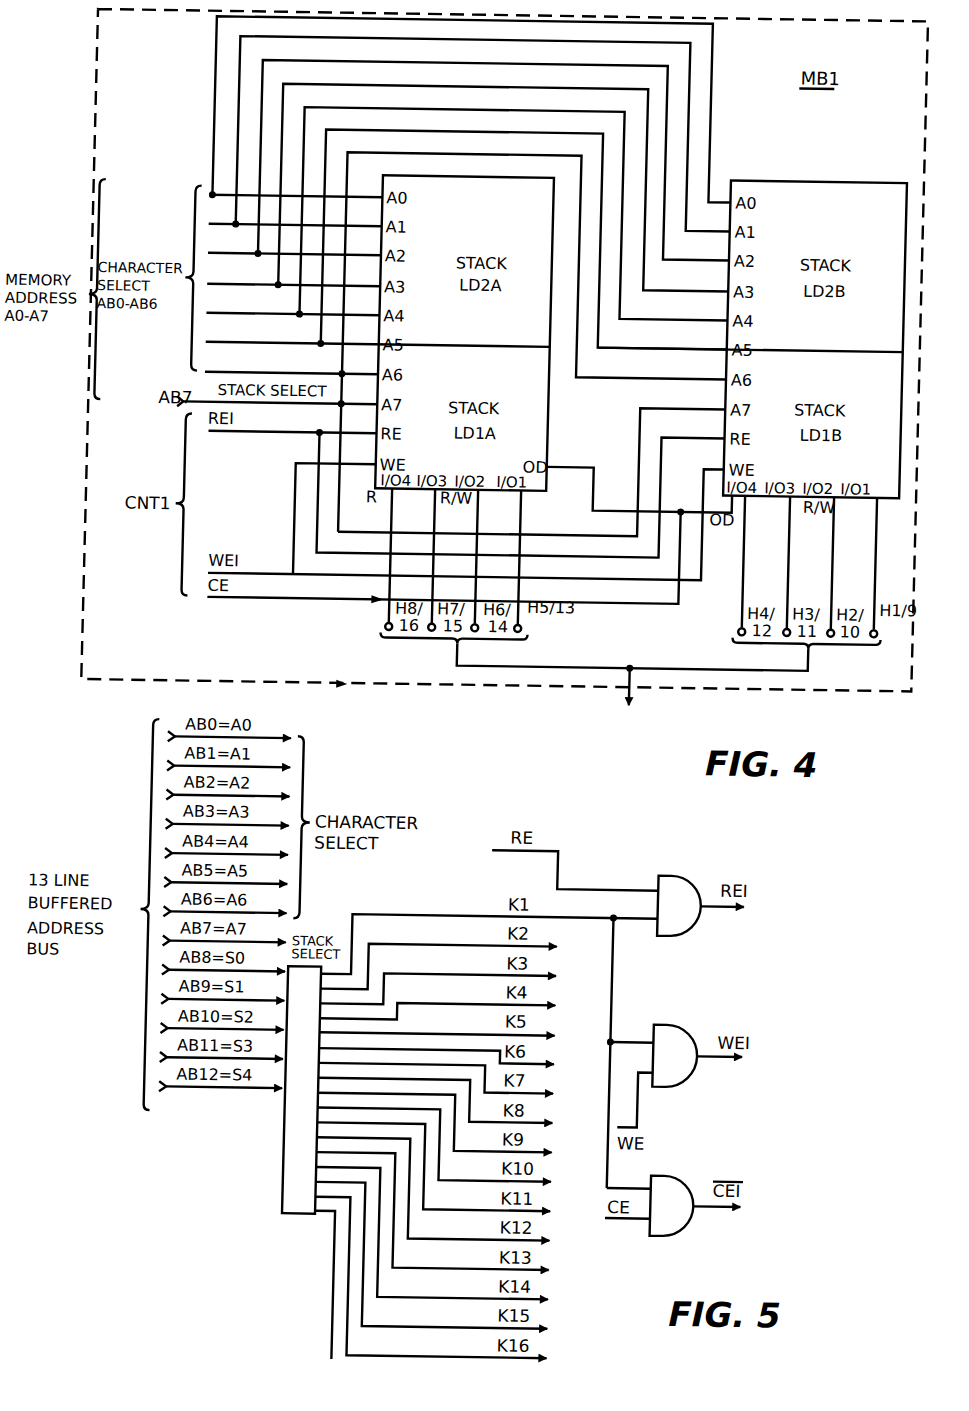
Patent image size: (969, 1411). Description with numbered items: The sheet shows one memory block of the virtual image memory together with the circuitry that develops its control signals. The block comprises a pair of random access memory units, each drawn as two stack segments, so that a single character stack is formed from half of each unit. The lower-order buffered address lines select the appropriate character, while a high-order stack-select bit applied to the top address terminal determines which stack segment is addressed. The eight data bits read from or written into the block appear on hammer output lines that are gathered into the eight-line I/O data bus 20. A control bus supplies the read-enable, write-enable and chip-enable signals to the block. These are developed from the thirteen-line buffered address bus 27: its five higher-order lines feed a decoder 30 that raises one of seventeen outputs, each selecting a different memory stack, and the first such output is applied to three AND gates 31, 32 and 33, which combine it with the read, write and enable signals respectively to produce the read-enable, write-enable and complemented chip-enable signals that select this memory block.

In FIG. 4, the I/O data bus 20 is at (653, 687).
In FIG. 5, the buffered address bus 27 is at (82, 1003).
In FIG. 5, the decoder 30 is at (310, 1133).
In FIG. 5, the AND gate 31 is at (702, 867).
In FIG. 5, the AND gate 32 is at (709, 1016).
In FIG. 5, the AND gate 33 is at (707, 1167).